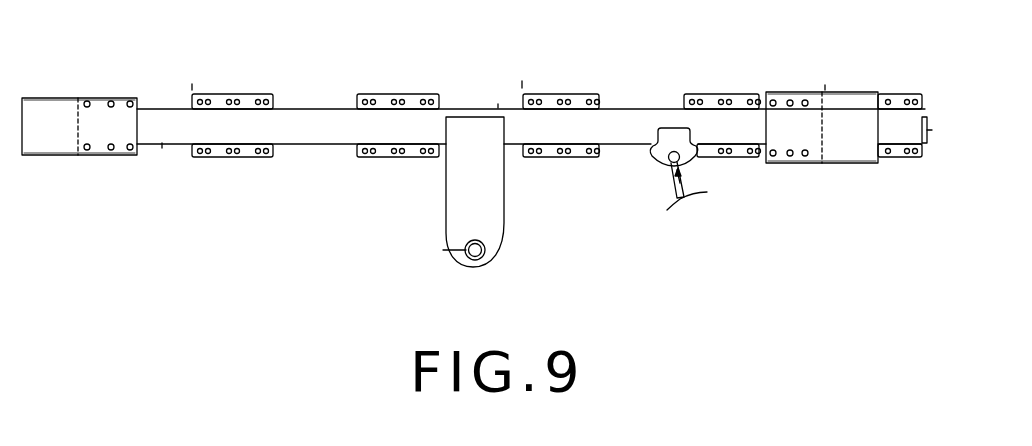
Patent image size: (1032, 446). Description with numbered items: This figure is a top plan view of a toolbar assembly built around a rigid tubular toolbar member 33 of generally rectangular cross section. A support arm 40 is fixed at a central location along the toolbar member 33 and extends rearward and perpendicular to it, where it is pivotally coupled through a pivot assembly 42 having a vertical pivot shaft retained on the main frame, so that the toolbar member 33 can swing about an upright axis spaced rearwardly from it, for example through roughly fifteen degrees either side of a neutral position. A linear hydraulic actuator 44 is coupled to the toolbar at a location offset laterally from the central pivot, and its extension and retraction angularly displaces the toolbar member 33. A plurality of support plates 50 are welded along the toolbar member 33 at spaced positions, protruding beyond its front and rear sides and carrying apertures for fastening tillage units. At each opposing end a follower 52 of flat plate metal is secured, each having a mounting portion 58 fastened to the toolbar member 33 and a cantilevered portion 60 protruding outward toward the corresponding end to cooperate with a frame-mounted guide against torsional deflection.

The toolbar member 33 is at (305, 113).
The support arm 40 is at (505, 201).
The pivot assembly 42 is at (490, 254).
The linear hydraulic actuator 44 is at (672, 178).
The support plates 50 is at (212, 92).
The followers 52 is at (452, 120).
The mounting portion 58 is at (98, 133).
The cantilevered portion 60 is at (60, 128).